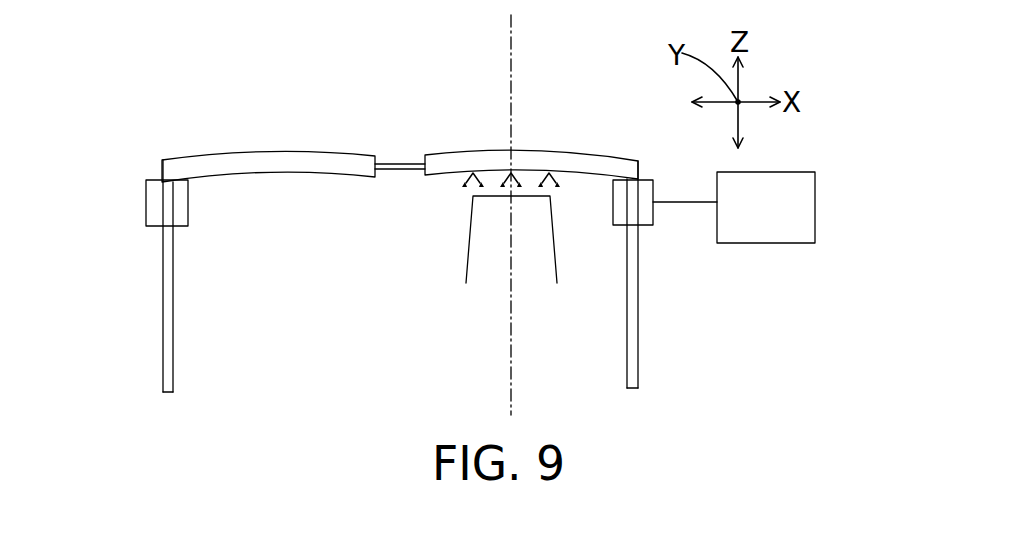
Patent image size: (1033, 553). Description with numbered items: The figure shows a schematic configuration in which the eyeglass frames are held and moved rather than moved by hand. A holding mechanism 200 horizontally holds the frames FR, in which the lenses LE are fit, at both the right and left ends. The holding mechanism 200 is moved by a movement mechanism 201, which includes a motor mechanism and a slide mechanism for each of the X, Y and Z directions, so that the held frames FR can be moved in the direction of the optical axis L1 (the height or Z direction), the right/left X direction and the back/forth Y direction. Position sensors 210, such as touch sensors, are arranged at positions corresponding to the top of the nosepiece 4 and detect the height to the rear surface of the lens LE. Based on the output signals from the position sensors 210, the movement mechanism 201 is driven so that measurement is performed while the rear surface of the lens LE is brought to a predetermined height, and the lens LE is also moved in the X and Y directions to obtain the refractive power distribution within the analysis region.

The lens LE is at (476, 158).
The frames FR is at (173, 335).
The holding mechanism 200 is at (148, 225).
The movement mechanism 201 is at (783, 237).
The optical axis L1 is at (512, 52).
The nosepiece 4 is at (555, 237).
The position sensors 210 is at (542, 185).